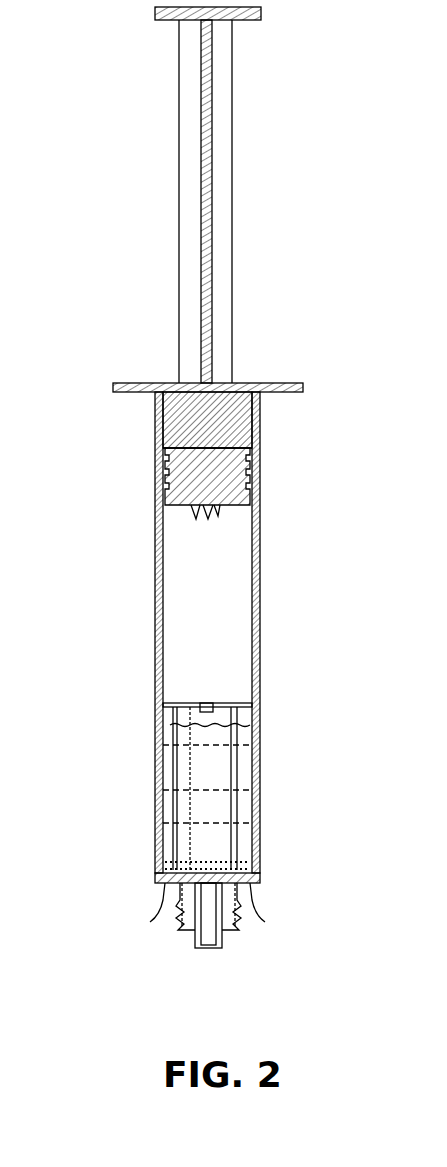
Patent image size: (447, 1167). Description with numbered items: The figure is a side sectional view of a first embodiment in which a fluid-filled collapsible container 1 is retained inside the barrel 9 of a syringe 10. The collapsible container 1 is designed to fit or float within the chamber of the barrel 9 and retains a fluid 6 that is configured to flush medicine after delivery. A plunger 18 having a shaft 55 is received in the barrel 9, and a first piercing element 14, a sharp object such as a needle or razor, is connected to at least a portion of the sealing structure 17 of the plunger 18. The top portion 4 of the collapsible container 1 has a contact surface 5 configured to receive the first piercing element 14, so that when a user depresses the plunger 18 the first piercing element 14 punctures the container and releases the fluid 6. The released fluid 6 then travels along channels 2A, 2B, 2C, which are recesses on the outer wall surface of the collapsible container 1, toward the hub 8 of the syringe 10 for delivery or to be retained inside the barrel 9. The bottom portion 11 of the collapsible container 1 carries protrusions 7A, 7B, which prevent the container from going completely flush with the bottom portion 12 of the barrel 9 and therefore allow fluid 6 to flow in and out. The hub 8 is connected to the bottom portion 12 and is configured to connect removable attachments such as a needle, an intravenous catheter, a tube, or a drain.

The shaft 55 is at (230, 145).
The plunger 18 is at (222, 298).
The sealing structure 17 is at (218, 487).
The first piercing element 14 is at (203, 518).
The syringe 10 is at (138, 564).
The barrel 9 is at (260, 563).
The contact surface 5 is at (213, 705).
The top portion 4 is at (228, 707).
The channel 2A is at (243, 707).
The channel 2B is at (183, 722).
The channel 2C is at (168, 748).
The collapsible container 1 is at (215, 770).
The fluid 6 is at (215, 827).
The bottom portion 11 is at (250, 878).
The bottom portion of barrel 12 is at (160, 893).
The protrusion 7A is at (180, 903).
The protrusion 7B is at (240, 903).
The hub 8 is at (238, 933).